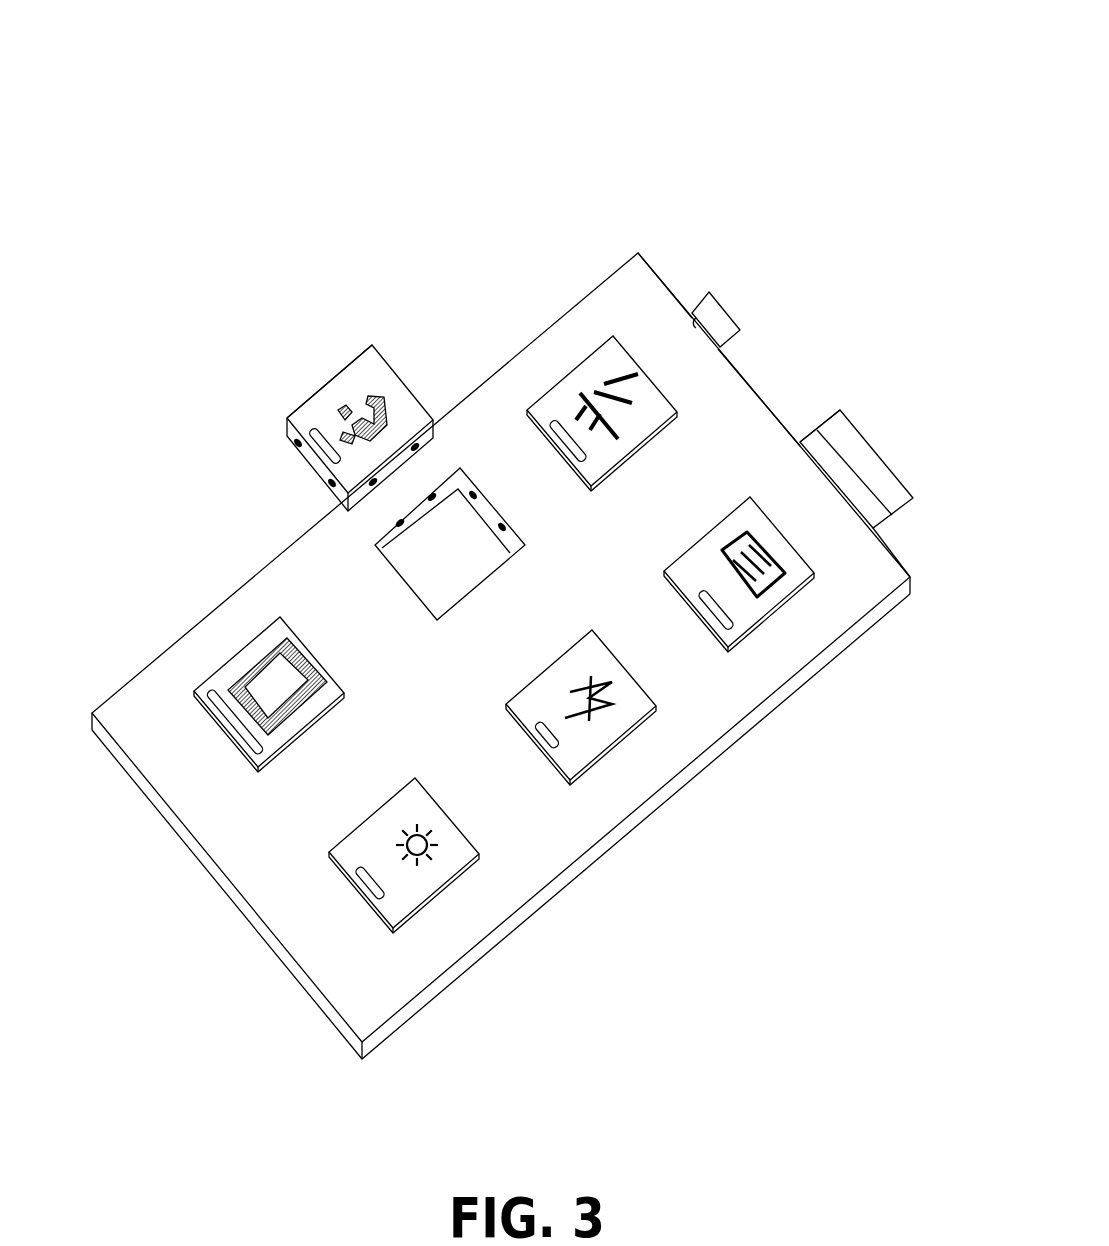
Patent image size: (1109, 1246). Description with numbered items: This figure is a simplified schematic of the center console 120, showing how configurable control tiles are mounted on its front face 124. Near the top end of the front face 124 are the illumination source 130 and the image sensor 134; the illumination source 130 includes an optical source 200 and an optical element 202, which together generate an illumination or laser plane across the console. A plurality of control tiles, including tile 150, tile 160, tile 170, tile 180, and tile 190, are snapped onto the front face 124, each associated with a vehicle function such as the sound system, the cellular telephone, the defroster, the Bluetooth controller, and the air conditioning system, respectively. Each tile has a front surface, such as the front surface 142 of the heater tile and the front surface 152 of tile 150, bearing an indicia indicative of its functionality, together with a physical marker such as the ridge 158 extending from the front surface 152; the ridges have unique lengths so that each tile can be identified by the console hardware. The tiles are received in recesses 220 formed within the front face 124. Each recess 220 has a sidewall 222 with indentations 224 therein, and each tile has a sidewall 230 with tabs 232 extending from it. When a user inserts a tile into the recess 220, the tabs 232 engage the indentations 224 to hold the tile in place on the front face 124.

The center console 120 is at (931, 50).
The front face 124 is at (889, 609).
The illumination source 130 is at (802, 426).
The image sensor 134 is at (727, 305).
The front surface 142 is at (633, 345).
The control tile 150 is at (261, 360).
The front surface 152 is at (380, 397).
The ridge 158 is at (288, 430).
The control tile 160 is at (275, 736).
The control tile 170 is at (765, 635).
The control tile 180 is at (629, 744).
The control tile 190 is at (455, 890).
The optical source 200 is at (860, 450).
The optical element 202 is at (838, 410).
The recess 220 is at (314, 382).
The sidewall 222 is at (460, 468).
The indentation 224 is at (431, 498).
The sidewall 230 is at (289, 440).
The tab 232 is at (331, 482).